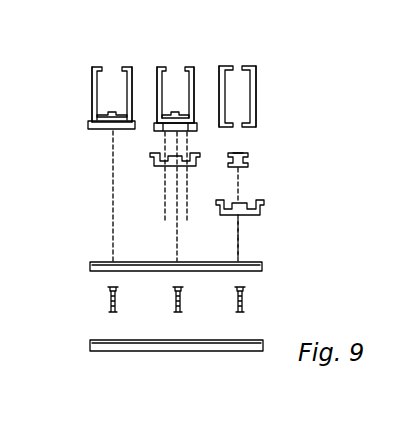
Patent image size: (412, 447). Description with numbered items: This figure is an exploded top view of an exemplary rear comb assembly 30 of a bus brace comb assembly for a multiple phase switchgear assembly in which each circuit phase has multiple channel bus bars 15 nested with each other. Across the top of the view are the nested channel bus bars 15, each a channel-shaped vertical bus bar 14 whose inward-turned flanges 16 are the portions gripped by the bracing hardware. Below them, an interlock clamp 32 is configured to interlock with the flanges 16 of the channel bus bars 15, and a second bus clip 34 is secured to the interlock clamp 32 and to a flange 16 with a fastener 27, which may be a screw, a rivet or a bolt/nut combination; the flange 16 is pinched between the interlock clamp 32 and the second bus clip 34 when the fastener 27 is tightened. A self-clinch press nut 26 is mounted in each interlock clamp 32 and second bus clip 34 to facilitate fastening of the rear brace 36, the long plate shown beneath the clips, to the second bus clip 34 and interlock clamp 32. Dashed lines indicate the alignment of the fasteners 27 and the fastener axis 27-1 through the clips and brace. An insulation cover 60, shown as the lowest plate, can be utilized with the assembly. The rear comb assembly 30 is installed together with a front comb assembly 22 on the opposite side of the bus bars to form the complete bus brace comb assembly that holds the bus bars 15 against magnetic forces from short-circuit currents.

The vertical bus bar 14 is at (132, 61).
The channel bus bar 15 is at (93, 96).
The flange 16 is at (193, 126).
The front comb assembly 22 is at (258, 249).
The self-clinch press nut 26 is at (240, 153).
The fastener 27 is at (162, 220).
The bolt axis 27-1 is at (236, 247).
The rear comb assembly 30 is at (342, 174).
The interlock clamp 32 is at (169, 132).
The second bus clip 34 is at (92, 131).
The rear brace 36 is at (263, 267).
The insulation cover 60 is at (92, 344).